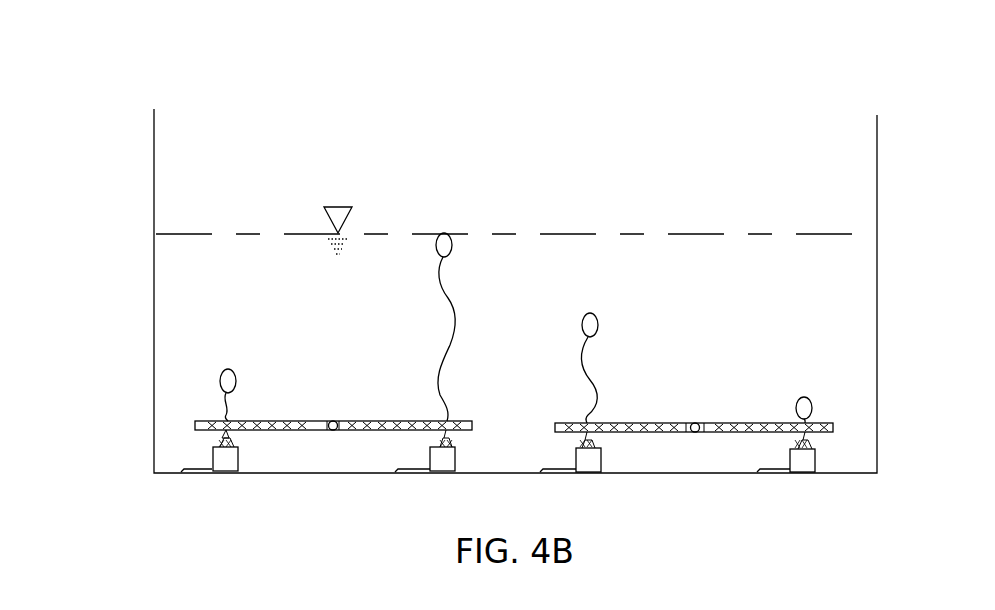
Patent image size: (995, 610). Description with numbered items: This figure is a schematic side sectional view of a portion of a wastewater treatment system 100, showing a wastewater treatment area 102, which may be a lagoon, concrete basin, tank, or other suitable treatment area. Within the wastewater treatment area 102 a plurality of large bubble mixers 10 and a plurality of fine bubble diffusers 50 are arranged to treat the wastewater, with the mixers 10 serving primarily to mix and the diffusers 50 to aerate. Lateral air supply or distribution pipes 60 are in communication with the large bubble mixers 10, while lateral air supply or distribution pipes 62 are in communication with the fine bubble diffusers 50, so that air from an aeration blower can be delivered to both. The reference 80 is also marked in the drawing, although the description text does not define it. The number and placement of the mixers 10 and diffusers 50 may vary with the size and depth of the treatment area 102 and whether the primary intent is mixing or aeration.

The large bubble mixer 10 is at (240, 457).
The fine bubble diffuser 50 is at (282, 420).
The lateral air supply or distribution pipe 60 is at (183, 470).
The lateral air supply or distribution pipe 62 is at (336, 432).
The second grow line 80 is at (378, 420).
The wastewater treatment system 100 is at (110, 96).
The wastewater treatment area 102 is at (859, 313).